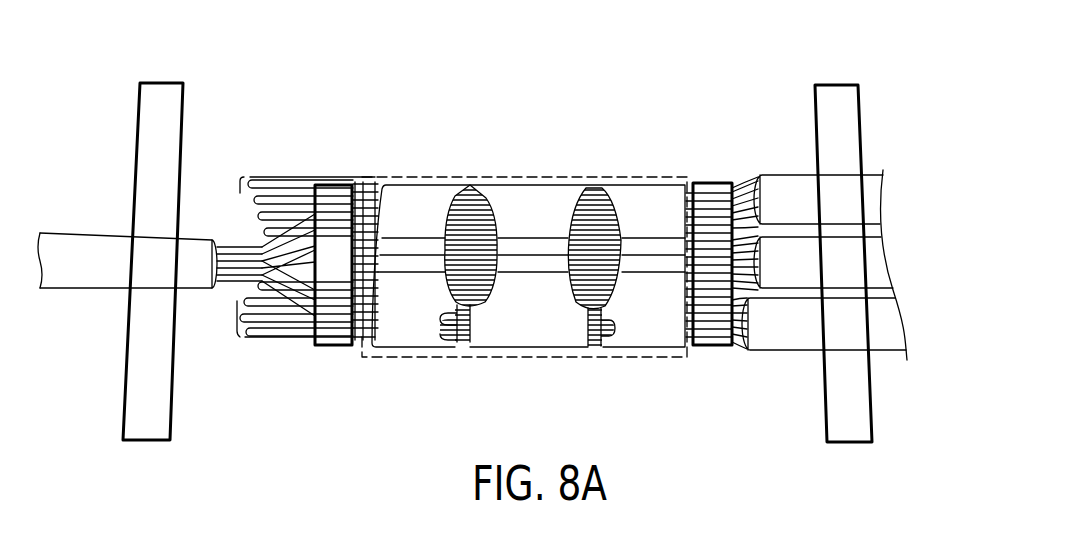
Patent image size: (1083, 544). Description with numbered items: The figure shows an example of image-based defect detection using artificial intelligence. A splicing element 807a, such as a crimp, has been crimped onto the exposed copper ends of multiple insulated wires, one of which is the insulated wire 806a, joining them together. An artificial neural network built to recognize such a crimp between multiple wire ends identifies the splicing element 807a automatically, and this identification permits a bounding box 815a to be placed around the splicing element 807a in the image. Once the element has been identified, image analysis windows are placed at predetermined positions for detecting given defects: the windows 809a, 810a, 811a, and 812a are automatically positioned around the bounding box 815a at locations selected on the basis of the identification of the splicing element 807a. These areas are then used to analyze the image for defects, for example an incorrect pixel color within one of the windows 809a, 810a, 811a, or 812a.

The insulated wire 806a is at (67, 233).
The splicing element 807a is at (540, 204).
The window 809a is at (183, 93).
The window 810a is at (333, 185).
The window 811a is at (712, 185).
The window 812a is at (815, 98).
The bounding box 815a is at (440, 176).